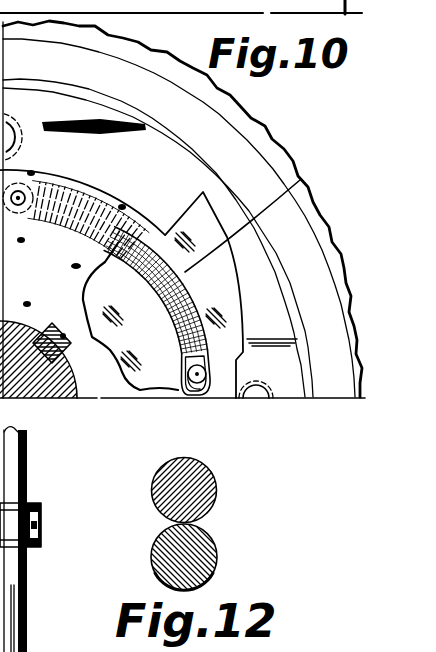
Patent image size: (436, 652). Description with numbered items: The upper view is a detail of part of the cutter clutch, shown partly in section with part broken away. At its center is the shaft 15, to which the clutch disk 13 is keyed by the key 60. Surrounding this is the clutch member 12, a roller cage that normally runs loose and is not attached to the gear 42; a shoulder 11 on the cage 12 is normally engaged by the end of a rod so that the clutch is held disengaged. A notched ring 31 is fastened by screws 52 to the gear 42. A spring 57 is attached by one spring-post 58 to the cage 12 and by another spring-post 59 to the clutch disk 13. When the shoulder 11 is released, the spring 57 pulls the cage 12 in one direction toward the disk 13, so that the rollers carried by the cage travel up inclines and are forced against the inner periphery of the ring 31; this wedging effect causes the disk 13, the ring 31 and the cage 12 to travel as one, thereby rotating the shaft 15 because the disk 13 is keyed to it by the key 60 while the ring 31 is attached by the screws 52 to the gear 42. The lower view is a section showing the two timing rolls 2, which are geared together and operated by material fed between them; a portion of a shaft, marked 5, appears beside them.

In FIG. 12, the timing rolls 2 is at (202, 553).
In FIG. 12, the shaft 5 is at (12, 564).
In FIG. 10, the shoulder 11 is at (195, 202).
In FIG. 10, the clutch member 12 is at (146, 311).
In FIG. 10, the clutch disk 13 is at (76, 200).
In FIG. 10, the shaft 15 is at (37, 387).
In FIG. 10, the notched ring 31 is at (150, 157).
In FIG. 10, the gear 42 is at (270, 153).
In FIG. 10, the screws 52 is at (269, 398).
In FIG. 10, the spring 57 is at (300, 180).
In FIG. 10, the spring-post 58 is at (199, 376).
In FIG. 10, the spring-post 59 is at (25, 193).
In FIG. 10, the key 60 is at (66, 335).